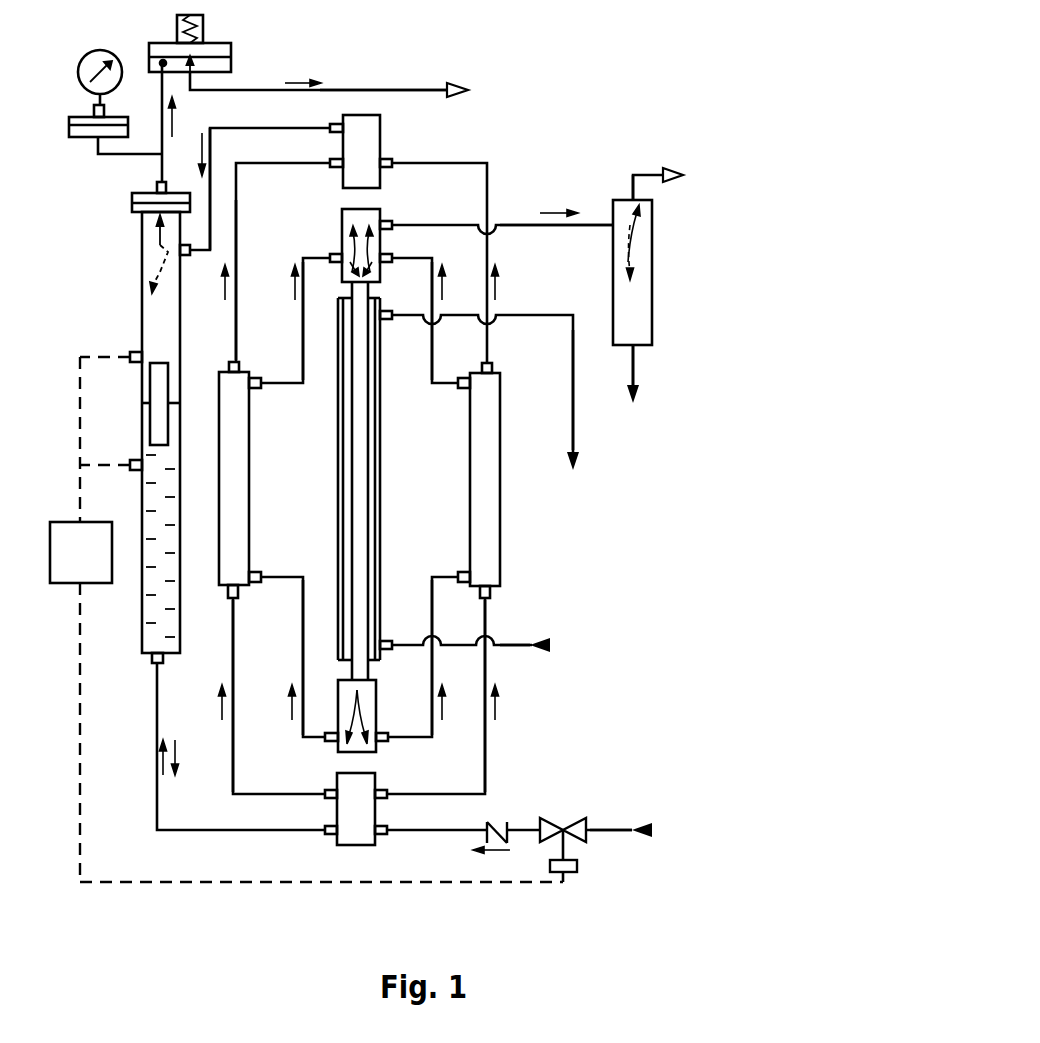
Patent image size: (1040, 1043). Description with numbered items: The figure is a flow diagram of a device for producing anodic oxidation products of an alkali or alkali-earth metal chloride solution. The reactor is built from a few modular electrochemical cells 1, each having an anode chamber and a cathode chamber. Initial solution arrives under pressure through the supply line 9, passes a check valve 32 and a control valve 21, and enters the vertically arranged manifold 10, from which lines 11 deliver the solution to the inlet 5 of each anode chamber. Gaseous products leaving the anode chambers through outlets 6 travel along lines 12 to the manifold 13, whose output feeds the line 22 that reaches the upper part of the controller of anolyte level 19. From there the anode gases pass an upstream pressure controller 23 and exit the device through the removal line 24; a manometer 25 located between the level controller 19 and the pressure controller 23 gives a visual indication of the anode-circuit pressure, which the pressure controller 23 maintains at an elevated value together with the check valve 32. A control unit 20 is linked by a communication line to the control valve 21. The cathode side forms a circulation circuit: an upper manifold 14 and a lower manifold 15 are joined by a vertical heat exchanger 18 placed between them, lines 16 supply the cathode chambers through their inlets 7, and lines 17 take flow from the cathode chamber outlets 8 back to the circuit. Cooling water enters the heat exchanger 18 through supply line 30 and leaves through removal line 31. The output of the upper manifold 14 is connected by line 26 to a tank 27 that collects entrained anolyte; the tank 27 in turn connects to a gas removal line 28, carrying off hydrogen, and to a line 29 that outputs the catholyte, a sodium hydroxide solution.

The modular electrochemical cell 1 is at (238, 462).
The inlet of the anode chamber 5 is at (238, 594).
The outlet of the anode chamber 6 is at (238, 364).
The inlet of the cathode chamber 7 is at (258, 572).
The outlet of the cathode chamber 8 is at (255, 392).
The supply line for supplying initial solution 9 is at (616, 828).
The manifold for supplying initial solution 10 is at (368, 835).
The lines for delivering initial solution to anode chambers 11 is at (233, 632).
The lines for removing gaseous products from anode chamber 12 is at (236, 205).
The manifold for collecting gaseous products from anode chamber 13 is at (343, 170).
The upper manifold of the cathode circulation circuit 14 is at (342, 232).
The lower manifold of the cathode circulation circuit 15 is at (343, 752).
The lines of cathode chamber supply of cells 16 is at (296, 722).
The lines of removal from cathode chambers 17 is at (303, 332).
The vertical heat exchanger 18 is at (338, 487).
The controller of anolyte level 19 is at (142, 308).
The control unit 20 is at (68, 522).
The control valve 21 is at (556, 823).
The line for removal of gaseous products from the anode chamber of the device 22 is at (253, 128).
The upstream pressure controller of anode gases 23 is at (227, 48).
The line of removal gaseous products of the device 24 is at (400, 90).
The manometer 25 is at (82, 137).
The line for removal gaseous products from cathode chamber of the device 26 is at (525, 225).
The tank for collecting entrained anolyte 27 is at (616, 205).
The line for removing gas 28 is at (632, 185).
The line for outputting catholyte 29 is at (705, 352).
The line for supplying cooling agent to heat exchanger 30 is at (498, 650).
The line for removing water from heat exchanger 31 is at (573, 396).
The check valve 32 is at (507, 823).